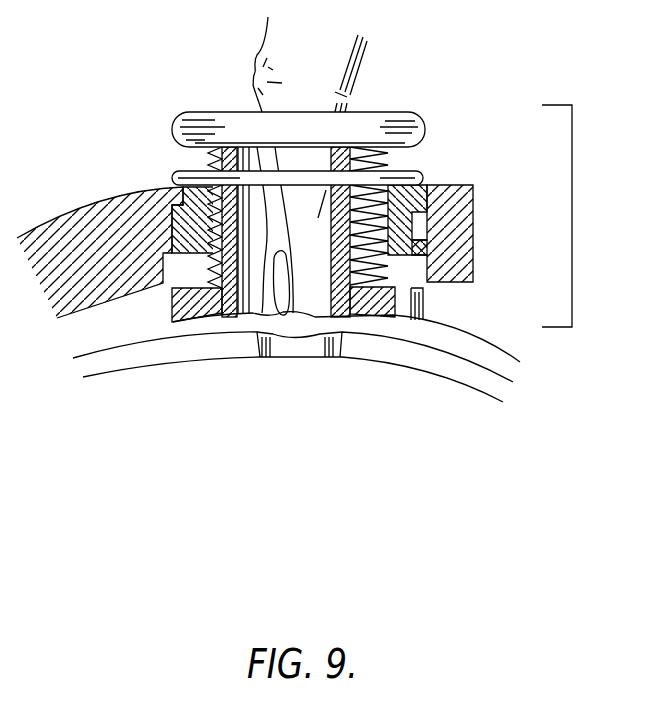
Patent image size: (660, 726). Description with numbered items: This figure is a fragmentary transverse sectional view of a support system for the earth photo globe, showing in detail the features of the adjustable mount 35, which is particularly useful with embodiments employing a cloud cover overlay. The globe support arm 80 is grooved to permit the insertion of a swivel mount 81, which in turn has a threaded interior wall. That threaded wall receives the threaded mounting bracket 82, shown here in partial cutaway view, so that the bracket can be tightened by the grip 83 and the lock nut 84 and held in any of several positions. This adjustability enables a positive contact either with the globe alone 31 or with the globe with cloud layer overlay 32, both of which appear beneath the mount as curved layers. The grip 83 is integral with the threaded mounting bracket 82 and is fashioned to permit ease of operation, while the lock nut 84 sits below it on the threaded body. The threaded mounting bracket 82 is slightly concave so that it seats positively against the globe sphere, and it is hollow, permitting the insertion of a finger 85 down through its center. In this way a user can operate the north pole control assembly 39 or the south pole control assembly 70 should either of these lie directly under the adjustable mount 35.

The globe 31 is at (503, 392).
The globe with cloud layer overlay 32 is at (513, 370).
The adjustable mount 35 is at (576, 216).
The north pole control assembly 39 is at (338, 344).
The south pole control assembly 70 is at (342, 322).
The globe support arm 80 is at (473, 229).
The swivel mount 81 is at (165, 208).
The threaded mounting bracket 82 is at (172, 313).
The grip 83 is at (425, 133).
The lock nut 84 is at (423, 177).
The finger 85 is at (365, 50).